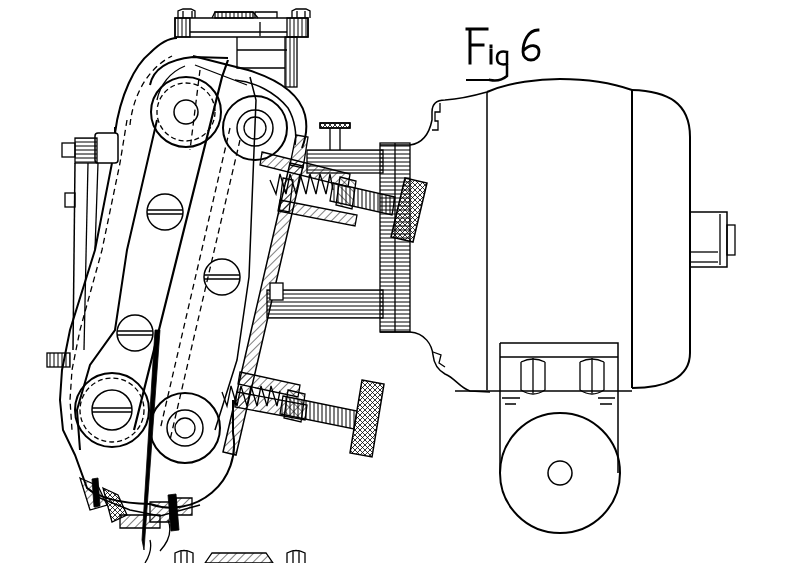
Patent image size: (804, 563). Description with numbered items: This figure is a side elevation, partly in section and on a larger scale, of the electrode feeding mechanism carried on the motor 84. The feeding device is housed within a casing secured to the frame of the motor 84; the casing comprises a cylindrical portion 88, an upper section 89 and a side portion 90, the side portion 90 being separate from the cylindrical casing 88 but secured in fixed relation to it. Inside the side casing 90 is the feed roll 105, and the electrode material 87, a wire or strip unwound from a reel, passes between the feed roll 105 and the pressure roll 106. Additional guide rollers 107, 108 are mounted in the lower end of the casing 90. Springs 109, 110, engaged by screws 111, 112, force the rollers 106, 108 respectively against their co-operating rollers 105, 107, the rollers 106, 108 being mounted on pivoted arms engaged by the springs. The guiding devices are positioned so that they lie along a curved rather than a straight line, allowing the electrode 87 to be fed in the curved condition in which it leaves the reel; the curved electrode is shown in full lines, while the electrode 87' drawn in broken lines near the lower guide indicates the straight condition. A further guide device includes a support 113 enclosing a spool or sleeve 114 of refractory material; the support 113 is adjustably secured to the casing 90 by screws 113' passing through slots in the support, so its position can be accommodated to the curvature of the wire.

The motor 84 is at (678, 332).
The electrode material 87 is at (142, 255).
The chain link teeth 87' is at (138, 507).
The cylindrical portion 88 is at (363, 310).
The upper section 89 is at (297, 67).
The side portion 90 is at (128, 118).
The feed roll 105 is at (145, 70).
The pressure roll 106 is at (287, 117).
The guide roller 107 is at (75, 455).
The guide roller 108 is at (203, 457).
The spring 109 is at (305, 220).
The spring 110 is at (283, 375).
The screw 111 is at (392, 196).
The screw 112 is at (382, 417).
The support 113 is at (208, 512).
The screws 113' is at (63, 520).
The spool or sleeve 114 is at (128, 540).